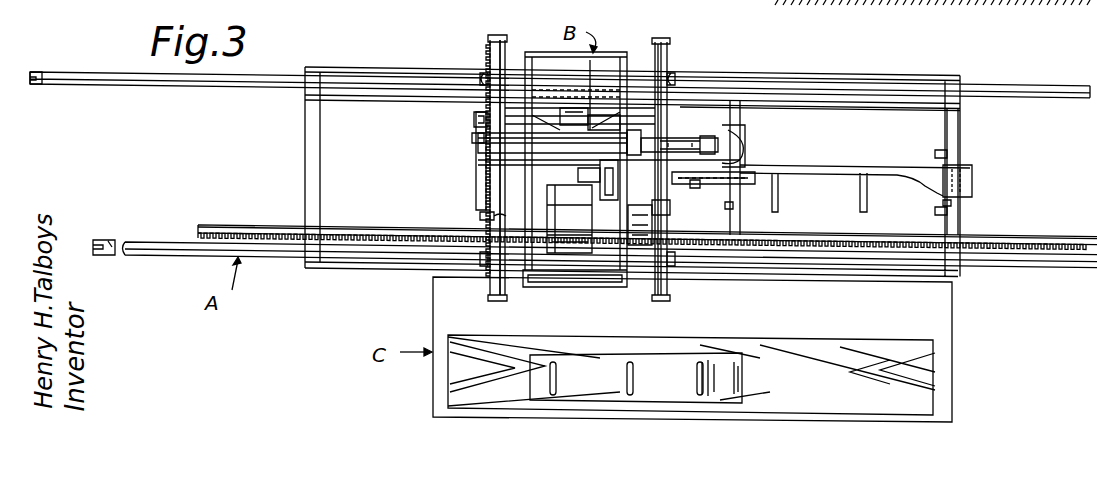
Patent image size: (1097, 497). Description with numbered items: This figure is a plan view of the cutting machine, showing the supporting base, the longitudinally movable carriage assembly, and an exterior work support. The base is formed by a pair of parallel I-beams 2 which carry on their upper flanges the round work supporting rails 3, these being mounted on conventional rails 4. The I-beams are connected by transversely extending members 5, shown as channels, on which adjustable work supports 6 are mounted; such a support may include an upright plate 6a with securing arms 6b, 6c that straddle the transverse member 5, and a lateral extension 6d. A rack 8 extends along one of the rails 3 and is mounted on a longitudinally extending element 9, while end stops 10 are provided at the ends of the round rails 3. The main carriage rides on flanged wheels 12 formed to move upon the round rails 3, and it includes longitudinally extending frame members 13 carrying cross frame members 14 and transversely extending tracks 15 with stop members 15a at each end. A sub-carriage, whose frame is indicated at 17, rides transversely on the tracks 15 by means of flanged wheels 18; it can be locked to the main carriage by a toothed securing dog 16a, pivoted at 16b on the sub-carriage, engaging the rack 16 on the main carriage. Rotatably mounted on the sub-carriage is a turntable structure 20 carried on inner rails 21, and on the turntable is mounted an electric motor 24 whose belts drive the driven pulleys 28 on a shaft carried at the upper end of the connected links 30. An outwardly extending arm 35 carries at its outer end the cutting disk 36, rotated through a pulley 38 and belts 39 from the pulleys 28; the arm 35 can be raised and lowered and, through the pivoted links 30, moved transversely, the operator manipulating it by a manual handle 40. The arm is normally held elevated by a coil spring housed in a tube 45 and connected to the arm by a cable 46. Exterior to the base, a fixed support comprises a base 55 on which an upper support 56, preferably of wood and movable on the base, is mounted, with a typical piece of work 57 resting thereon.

The I-beam 2 is at (392, 105).
The work supporting rail 3 is at (141, 82).
The conventional rail 4 is at (372, 101).
The transversely extending member 5 is at (310, 151).
The work support 6 is at (958, 155).
The upright plate 6a is at (942, 206).
The securing arm 6b is at (938, 152).
The securing arm 6c is at (975, 184).
The lateral extension 6d is at (960, 132).
The rack 8 is at (227, 226).
The longitudinally extending element 9 is at (265, 226).
The end stop 10 is at (36, 72).
The flanged wheel 12 is at (486, 77).
The longitudinally extending frame member 13 is at (596, 112).
The cross frame member 14 is at (668, 66).
The transversely extending track 15 is at (505, 55).
The stop member 15a is at (512, 29).
The rack 16 is at (488, 58).
The toothed securing dog 16a is at (474, 120).
The pivot 16b is at (476, 180).
The sub-carriage frame 17 is at (490, 216).
The flanged wheel 18 is at (474, 138).
The turntable structure 20 is at (612, 122).
The inner rail 21 is at (612, 180).
The motor 24 is at (569, 219).
The driven pulley 28 is at (589, 175).
The connected link 30 is at (570, 108).
The outwardly extending arm 35 is at (706, 137).
The cutting disk 36 is at (695, 189).
The pulley 38 is at (703, 184).
The belt 39 is at (621, 180).
The manual handle 40 is at (746, 148).
The tube 45 is at (485, 145).
The cable 46 is at (634, 141).
The base 55 is at (948, 333).
The upper support 56 is at (794, 406).
The piece of work 57 is at (581, 364).